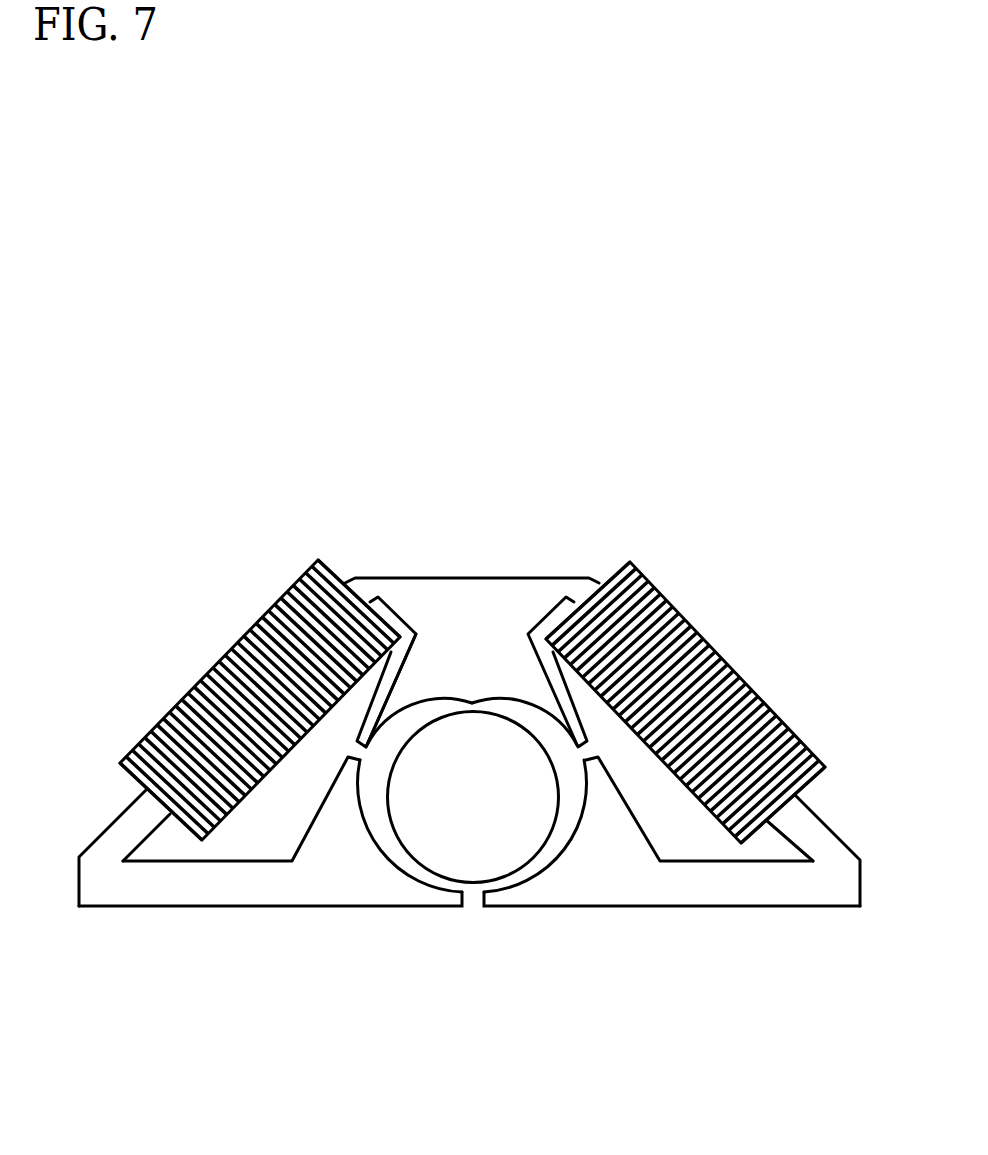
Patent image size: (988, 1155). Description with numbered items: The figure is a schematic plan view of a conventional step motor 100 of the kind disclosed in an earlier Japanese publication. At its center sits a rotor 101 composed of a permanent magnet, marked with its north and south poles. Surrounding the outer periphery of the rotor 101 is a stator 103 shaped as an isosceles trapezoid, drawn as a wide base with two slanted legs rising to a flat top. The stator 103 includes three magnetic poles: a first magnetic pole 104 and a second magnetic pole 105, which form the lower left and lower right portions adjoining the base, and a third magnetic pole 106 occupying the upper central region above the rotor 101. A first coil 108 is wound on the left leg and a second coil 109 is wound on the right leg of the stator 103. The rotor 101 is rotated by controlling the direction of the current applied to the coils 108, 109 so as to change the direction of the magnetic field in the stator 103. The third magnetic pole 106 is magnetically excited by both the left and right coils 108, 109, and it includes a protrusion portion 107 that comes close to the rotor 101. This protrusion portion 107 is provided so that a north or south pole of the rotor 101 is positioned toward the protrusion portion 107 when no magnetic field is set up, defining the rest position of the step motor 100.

The step motor 100 is at (483, 462).
The rotor 101 is at (528, 818).
The stator 103 is at (514, 578).
The first magnetic pole 104 is at (385, 888).
The second magnetic pole 105 is at (550, 883).
The third magnetic pole 106 is at (443, 622).
The protrusion portion 107 is at (473, 703).
The first coil 108 is at (243, 637).
The second coil 109 is at (747, 677).